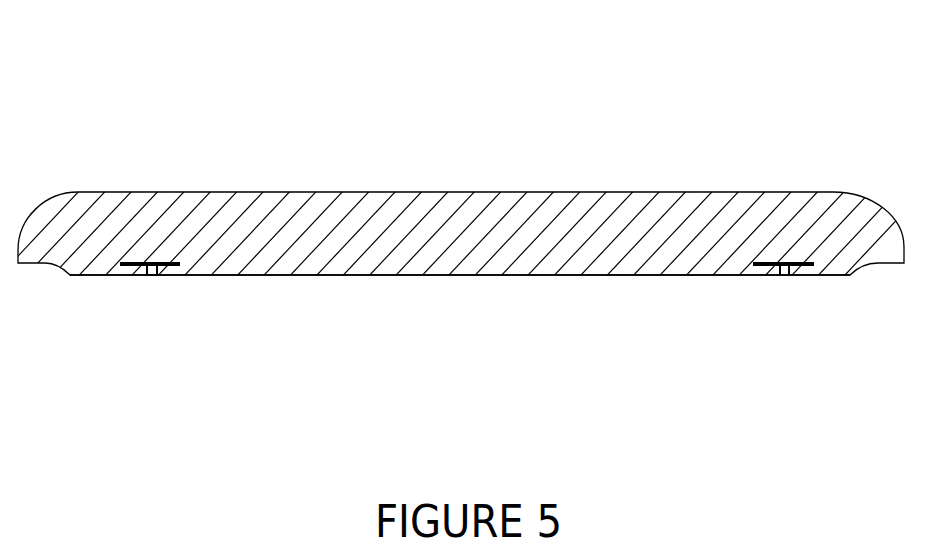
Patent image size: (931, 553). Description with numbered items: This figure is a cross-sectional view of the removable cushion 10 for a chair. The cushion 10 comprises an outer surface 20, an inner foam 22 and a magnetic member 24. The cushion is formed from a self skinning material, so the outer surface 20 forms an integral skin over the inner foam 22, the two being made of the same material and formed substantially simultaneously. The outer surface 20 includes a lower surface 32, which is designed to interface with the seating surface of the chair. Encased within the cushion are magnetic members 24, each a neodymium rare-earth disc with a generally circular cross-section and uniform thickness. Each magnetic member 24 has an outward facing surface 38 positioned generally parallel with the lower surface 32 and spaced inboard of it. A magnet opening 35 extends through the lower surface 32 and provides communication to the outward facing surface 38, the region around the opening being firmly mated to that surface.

The removable cushion 10 is at (563, 65).
The outer surface 20 is at (574, 192).
The inner foam 22 is at (465, 210).
The magnetic member 24 is at (150, 262).
The lower surface 32 is at (426, 276).
The magnet opening 35 is at (150, 287).
The outward facing surface 38 is at (158, 276).